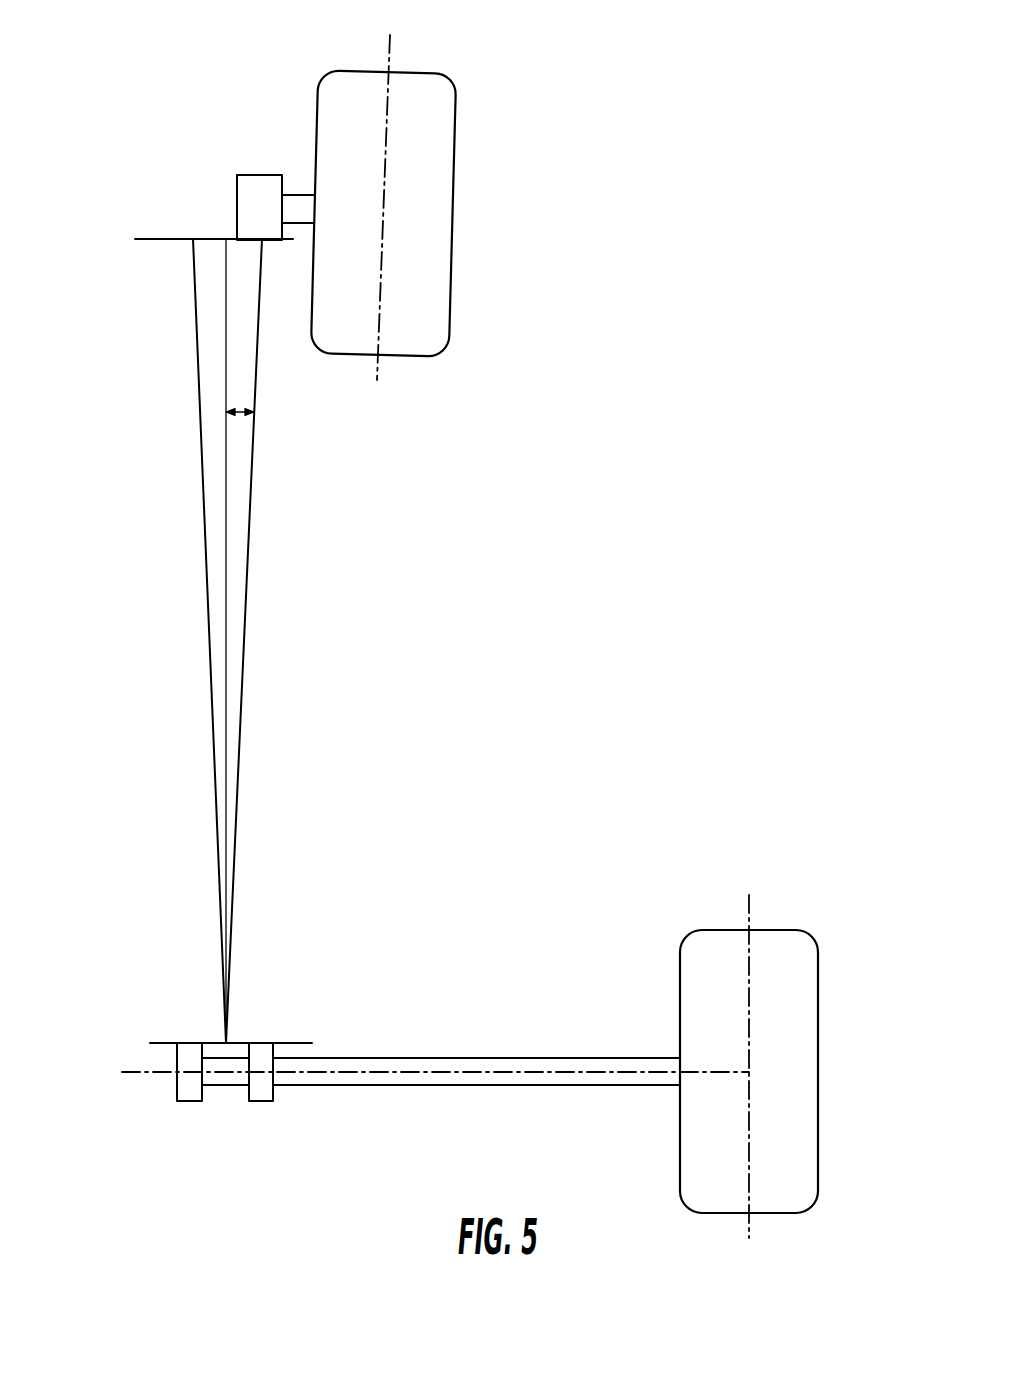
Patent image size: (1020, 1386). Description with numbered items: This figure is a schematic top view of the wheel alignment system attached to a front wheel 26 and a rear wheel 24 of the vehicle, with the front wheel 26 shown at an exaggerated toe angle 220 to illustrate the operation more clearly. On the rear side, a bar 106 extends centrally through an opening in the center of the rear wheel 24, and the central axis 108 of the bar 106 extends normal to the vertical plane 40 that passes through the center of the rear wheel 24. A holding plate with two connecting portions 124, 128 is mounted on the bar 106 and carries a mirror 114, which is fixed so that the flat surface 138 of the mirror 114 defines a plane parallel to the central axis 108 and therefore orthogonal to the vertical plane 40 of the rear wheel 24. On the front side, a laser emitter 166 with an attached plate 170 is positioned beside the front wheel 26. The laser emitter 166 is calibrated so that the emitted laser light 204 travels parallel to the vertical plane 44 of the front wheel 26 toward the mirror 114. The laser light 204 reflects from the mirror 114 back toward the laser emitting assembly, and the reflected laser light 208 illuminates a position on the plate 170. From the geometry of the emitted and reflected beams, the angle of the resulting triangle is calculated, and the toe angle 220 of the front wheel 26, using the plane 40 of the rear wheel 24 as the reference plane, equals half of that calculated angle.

The rear wheel 24 is at (680, 1007).
The front wheel 26 is at (453, 197).
The vertical plane 40 is at (747, 918).
The vertical plane 44 is at (392, 57).
The bar 106 is at (477, 1058).
The central axis 108 is at (160, 1073).
The mirror 114 is at (300, 1042).
The connecting portion 124 is at (263, 1102).
The connecting portion 128 is at (188, 1102).
The flat surface 138 is at (273, 1034).
The laser emitter 166 is at (247, 175).
The plate 170 is at (158, 238).
The laser light 204 is at (253, 440).
The reflected laser light 208 is at (198, 368).
The toe angle 220 is at (240, 411).